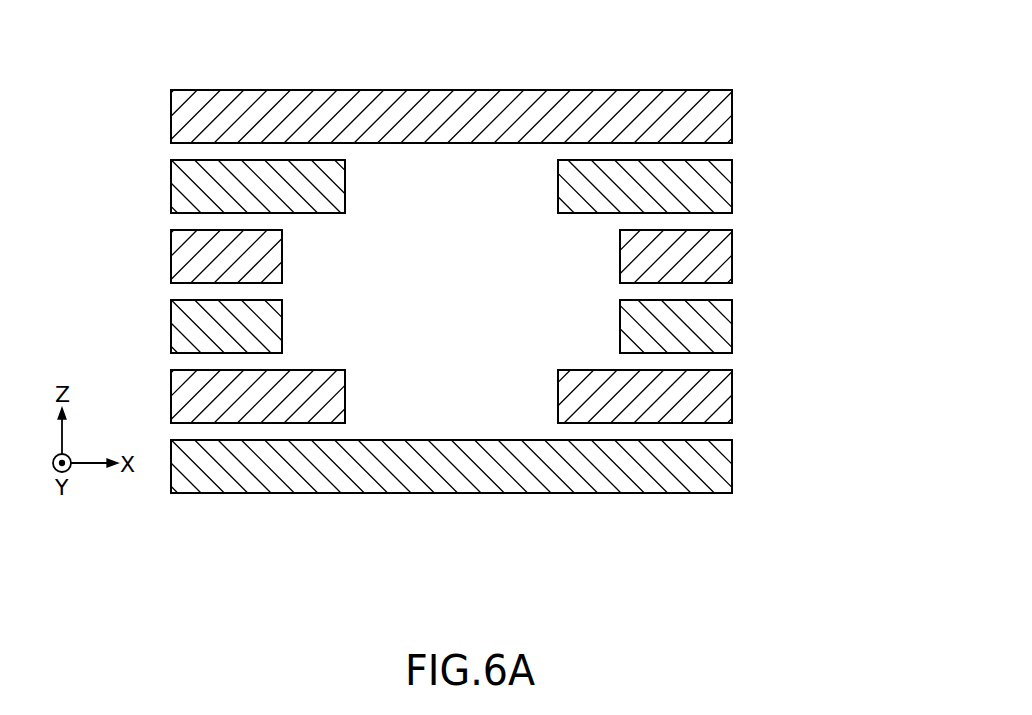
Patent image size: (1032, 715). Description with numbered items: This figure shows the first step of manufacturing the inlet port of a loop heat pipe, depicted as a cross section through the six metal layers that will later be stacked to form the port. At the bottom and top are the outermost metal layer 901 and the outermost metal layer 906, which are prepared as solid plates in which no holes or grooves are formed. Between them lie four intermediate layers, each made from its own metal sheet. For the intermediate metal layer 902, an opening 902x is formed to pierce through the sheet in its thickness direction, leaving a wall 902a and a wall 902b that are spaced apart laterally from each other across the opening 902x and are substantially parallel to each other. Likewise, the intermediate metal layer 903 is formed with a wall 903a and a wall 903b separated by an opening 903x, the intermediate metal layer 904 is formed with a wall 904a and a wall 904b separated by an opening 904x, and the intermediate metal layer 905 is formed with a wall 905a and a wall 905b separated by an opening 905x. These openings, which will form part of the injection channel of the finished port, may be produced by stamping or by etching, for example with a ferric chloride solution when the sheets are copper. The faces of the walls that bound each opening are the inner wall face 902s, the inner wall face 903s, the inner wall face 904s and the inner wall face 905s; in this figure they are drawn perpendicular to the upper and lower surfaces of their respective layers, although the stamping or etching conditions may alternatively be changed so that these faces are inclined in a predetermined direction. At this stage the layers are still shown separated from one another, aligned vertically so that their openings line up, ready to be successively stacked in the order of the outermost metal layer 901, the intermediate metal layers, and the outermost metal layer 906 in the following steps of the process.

The outermost metal layer 901 is at (742, 460).
The intermediate metal layer 902 is at (502, 462).
The wall 902a is at (196, 397).
The wall 902b is at (663, 397).
The inner wall face 902s is at (346, 402).
The opening 902x is at (482, 397).
The intermediate metal layer 903 is at (504, 427).
The wall 903a is at (225, 330).
The wall 903b is at (693, 330).
The inner wall face 903s is at (283, 330).
The opening 903x is at (442, 323).
The intermediate metal layer 904 is at (504, 155).
The wall 904a is at (225, 253).
The wall 904b is at (693, 253).
The inner wall face 904s is at (283, 253).
The opening 904x is at (442, 257).
The intermediate metal layer 905 is at (502, 120).
The wall 905a is at (196, 187).
The wall 905b is at (663, 187).
The inner wall face 905s is at (346, 181).
The opening 905x is at (480, 187).
The outermost metal layer 906 is at (742, 110).